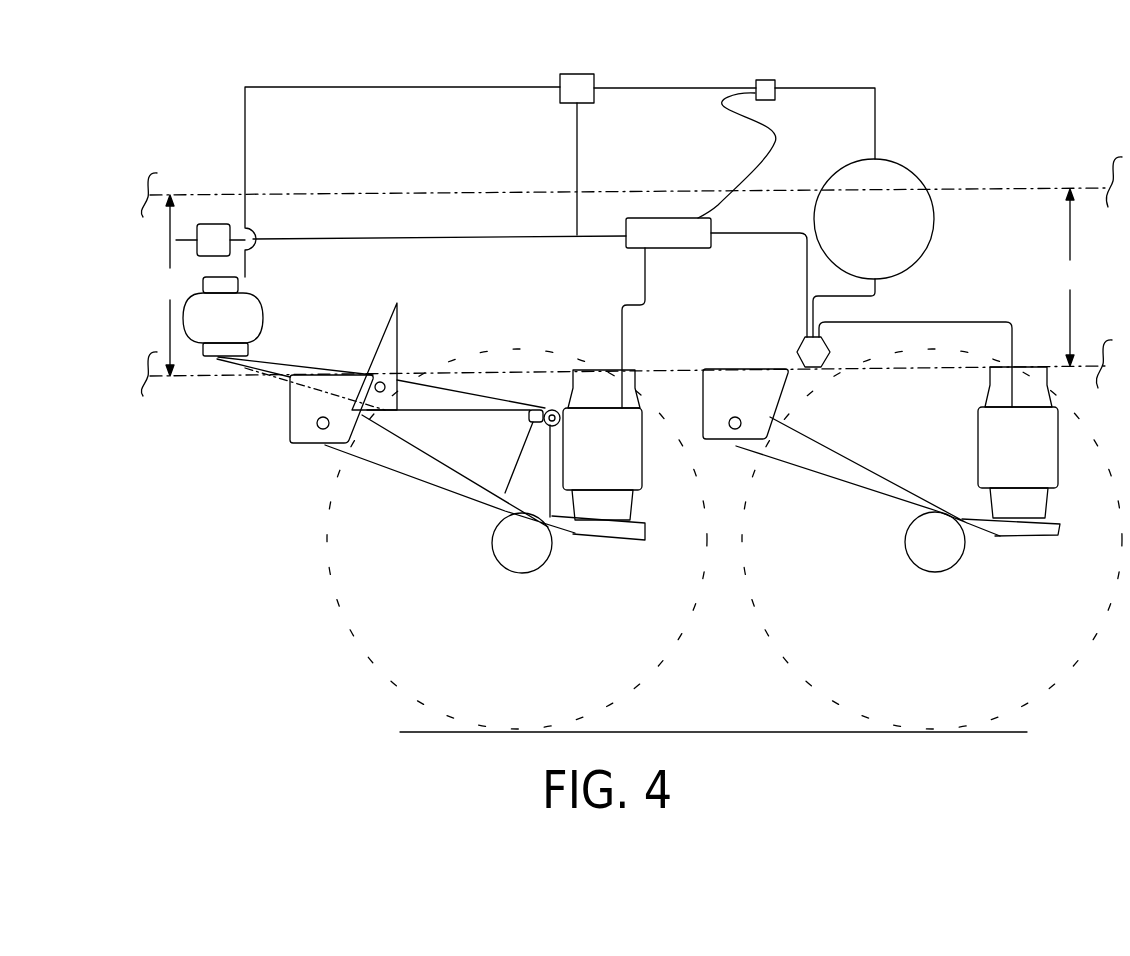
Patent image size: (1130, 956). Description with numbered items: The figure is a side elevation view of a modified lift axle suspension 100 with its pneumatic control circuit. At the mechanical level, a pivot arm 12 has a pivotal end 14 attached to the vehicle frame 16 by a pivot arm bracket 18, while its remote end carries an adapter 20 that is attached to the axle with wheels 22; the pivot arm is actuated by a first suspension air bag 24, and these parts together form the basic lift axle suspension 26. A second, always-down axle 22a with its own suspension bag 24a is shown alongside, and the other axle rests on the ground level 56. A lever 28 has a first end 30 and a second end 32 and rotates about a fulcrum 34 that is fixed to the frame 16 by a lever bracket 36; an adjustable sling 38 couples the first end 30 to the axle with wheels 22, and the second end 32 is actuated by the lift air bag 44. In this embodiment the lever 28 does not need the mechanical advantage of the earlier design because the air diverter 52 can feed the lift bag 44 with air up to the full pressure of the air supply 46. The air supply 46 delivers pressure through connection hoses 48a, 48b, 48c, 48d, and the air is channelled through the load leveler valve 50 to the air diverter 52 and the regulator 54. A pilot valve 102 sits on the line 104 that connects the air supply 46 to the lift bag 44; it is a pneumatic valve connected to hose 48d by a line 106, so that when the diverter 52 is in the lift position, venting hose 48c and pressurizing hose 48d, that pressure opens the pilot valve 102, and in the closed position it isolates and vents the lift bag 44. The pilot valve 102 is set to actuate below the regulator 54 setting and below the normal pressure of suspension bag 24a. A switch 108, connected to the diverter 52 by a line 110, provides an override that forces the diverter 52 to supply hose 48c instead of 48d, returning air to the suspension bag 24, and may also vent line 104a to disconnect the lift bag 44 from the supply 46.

The pivot arm 12 is at (450, 490).
The pivotal end 14 is at (317, 428).
The vehicle frame 16 is at (620, 282).
The pivot arm bracket 18 is at (288, 405).
The adapter 20 is at (590, 540).
The axle with wheels 22 is at (520, 545).
The always down axle 22a is at (937, 545).
The first suspension air bag 24 is at (625, 445).
The suspension bag 24a is at (1040, 440).
The basic lift axle suspension 26 is at (1077, 635).
The lever 28 is at (435, 400).
The first end 30 is at (545, 405).
The second end 32 is at (235, 360).
The fulcrum 34 is at (378, 385).
The lever bracket 36 is at (395, 325).
The adjustable sling 38 is at (510, 468).
The lift air bag 44 is at (240, 310).
The air supply 46 is at (885, 220).
The connection hose 48a is at (950, 322).
The connection hose 48b is at (805, 285).
The connection hose 48c is at (650, 290).
The connection hose 48d is at (410, 235).
The load leveler valve 50 is at (818, 358).
The air diverter 52 is at (683, 232).
The regulator 54 is at (215, 235).
The ground level 56 is at (400, 732).
The modified lift axle suspension 100 is at (195, 623).
The pilot valve 102 is at (575, 88).
The line 104 is at (390, 86).
The line 104a is at (675, 86).
The line 106 is at (578, 168).
The switch 108 is at (770, 82).
The line 110 is at (775, 125).